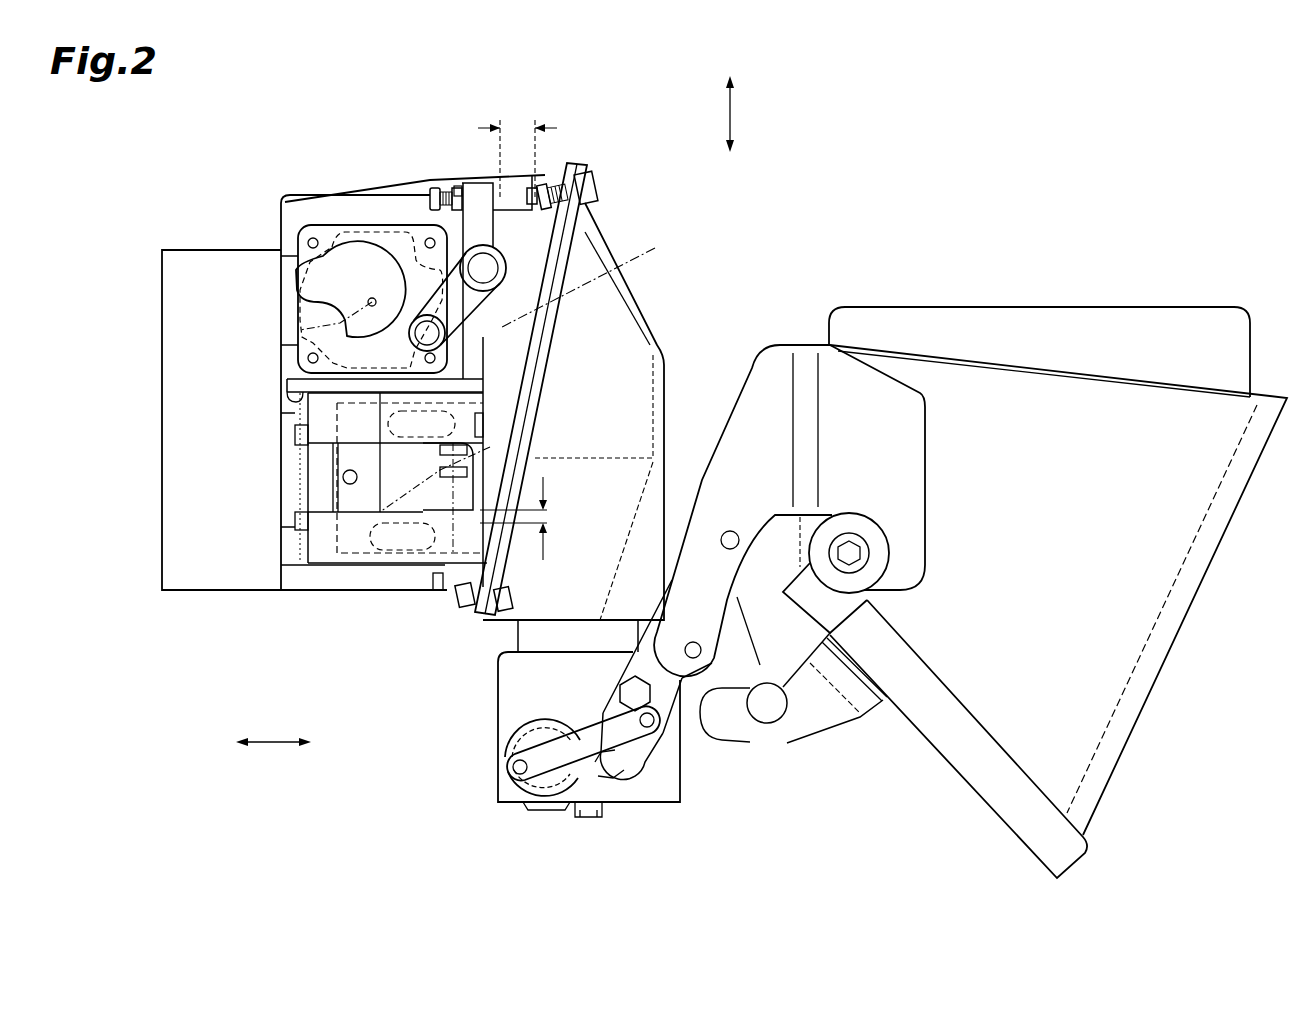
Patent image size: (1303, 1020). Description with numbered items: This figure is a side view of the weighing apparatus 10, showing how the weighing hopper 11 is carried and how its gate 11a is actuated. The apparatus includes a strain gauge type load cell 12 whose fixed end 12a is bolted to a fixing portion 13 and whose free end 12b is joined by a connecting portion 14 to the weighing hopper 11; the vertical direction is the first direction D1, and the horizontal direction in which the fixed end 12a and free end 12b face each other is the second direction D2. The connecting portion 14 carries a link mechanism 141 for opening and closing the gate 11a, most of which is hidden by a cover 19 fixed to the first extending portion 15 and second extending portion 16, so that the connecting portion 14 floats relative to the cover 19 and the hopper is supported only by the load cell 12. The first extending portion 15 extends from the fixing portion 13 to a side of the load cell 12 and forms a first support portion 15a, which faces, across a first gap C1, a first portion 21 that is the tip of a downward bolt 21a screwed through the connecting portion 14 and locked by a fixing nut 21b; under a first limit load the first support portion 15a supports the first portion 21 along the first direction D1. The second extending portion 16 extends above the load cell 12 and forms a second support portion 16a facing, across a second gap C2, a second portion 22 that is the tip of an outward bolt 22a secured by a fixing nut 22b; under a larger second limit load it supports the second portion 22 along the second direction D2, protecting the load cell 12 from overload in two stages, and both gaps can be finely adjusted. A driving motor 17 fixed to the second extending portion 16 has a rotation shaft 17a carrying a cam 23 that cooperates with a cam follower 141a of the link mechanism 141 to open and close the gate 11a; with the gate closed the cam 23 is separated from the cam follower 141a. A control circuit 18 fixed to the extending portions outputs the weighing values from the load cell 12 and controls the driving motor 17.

The weighing apparatus 10 is at (905, 133).
The weighing hopper 11 is at (1042, 307).
The gate 11a is at (947, 760).
The load cell 12 is at (395, 567).
The fixed end 12a is at (333, 480).
The free end 12b is at (520, 458).
The fixing portion 13 is at (323, 497).
The connecting portion 14 is at (497, 708).
The link mechanism 141 is at (510, 240).
The cam follower 141a is at (609, 280).
The first extending portion 15 is at (363, 538).
The first support portion 15a is at (447, 592).
The second extending portion 16 is at (363, 224).
The second support portion 16a is at (540, 177).
The driving motor 17 is at (355, 237).
The rotation shaft 17a is at (300, 330).
The control circuit 18 is at (205, 592).
The cover 19 is at (648, 304).
The first portion 21 is at (424, 543).
The bolt 21a is at (445, 448).
The fixing nut 21b is at (447, 467).
The second portion 22 is at (500, 190).
The bolt 22a is at (440, 188).
The fixing nut 22b is at (456, 184).
The cam 23 is at (345, 230).
The first gap C1 is at (534, 518).
The second gap C2 is at (517, 148).
The first direction D1 is at (735, 118).
The second direction D2 is at (272, 746).